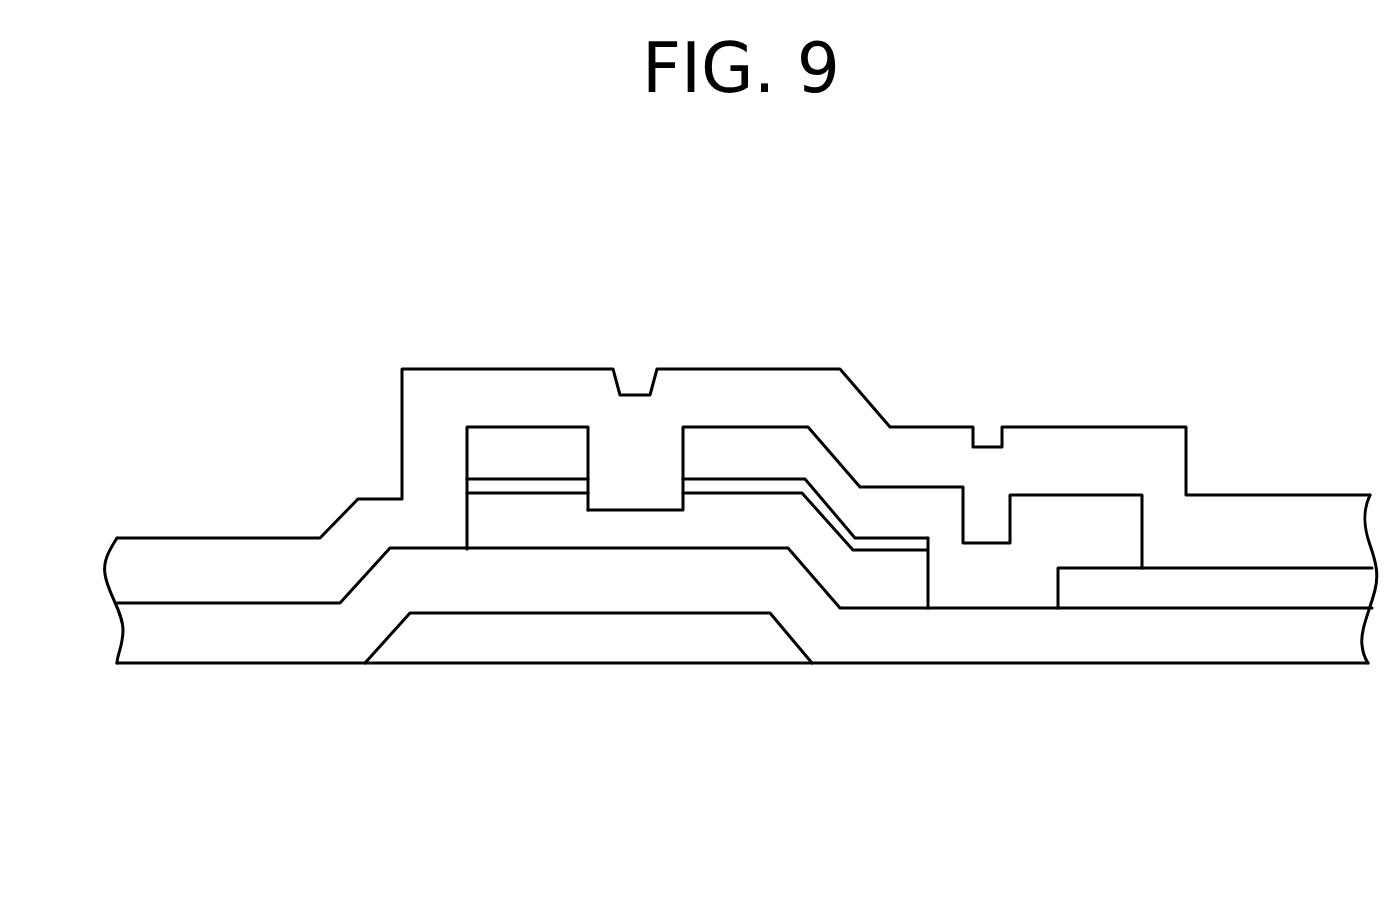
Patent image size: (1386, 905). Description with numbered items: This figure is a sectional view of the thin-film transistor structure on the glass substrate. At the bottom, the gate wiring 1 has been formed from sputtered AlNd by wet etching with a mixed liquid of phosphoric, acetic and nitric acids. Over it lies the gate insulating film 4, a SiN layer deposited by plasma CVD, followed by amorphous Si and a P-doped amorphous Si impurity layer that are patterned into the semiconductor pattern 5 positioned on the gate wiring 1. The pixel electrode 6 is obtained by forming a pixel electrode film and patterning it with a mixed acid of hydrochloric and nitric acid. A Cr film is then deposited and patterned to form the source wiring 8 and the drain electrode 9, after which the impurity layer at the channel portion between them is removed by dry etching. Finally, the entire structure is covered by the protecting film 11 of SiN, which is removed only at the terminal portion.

The gate wiring 1 is at (580, 645).
The gate insulating film 4 is at (258, 645).
The semiconductor pattern 5 is at (876, 589).
The pixel electrode 6 is at (1257, 588).
The source wiring 8 is at (529, 445).
The drain electrode 9 is at (758, 445).
The protecting film 11 is at (259, 567).